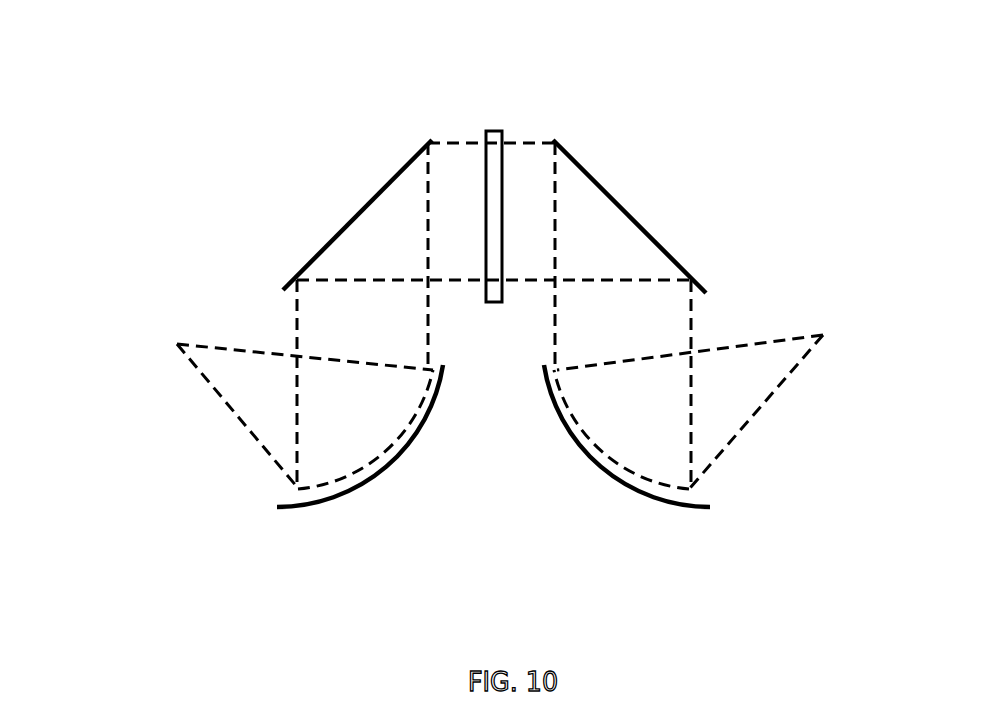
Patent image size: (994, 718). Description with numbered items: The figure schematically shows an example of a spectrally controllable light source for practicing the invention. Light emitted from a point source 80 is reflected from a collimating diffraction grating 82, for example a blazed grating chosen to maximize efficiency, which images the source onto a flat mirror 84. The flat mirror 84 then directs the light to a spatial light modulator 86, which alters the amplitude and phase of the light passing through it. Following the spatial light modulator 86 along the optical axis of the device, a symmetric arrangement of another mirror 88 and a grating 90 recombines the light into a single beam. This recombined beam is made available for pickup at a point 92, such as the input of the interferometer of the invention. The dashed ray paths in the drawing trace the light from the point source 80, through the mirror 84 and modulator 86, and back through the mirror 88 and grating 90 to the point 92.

The point source 80 is at (167, 342).
The collimating diffraction grating 82 is at (363, 487).
The flat mirror 84 is at (323, 243).
The spatial light modulator 86 is at (493, 130).
The mirror 88 is at (650, 230).
The grating 90 is at (638, 492).
The point 92 is at (823, 337).